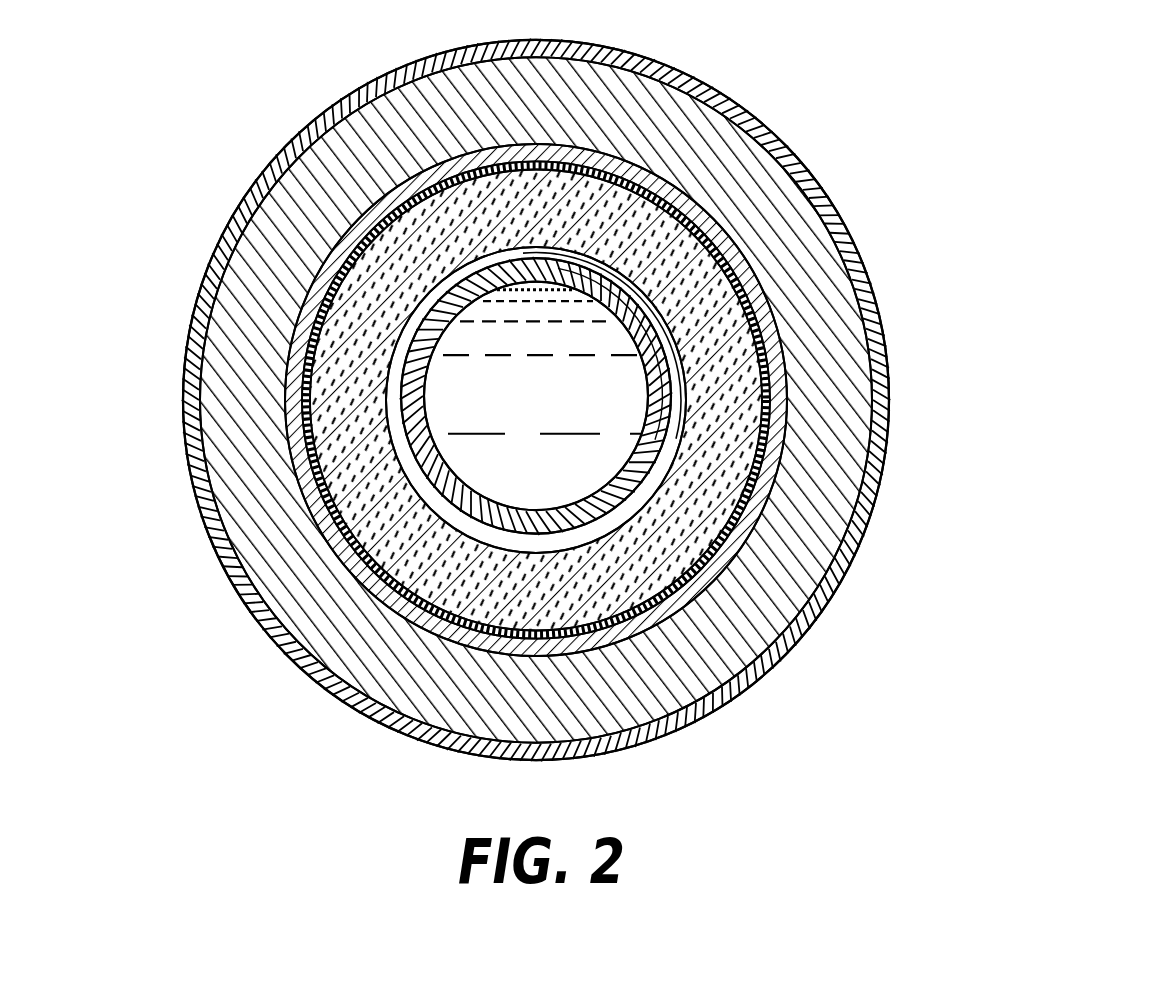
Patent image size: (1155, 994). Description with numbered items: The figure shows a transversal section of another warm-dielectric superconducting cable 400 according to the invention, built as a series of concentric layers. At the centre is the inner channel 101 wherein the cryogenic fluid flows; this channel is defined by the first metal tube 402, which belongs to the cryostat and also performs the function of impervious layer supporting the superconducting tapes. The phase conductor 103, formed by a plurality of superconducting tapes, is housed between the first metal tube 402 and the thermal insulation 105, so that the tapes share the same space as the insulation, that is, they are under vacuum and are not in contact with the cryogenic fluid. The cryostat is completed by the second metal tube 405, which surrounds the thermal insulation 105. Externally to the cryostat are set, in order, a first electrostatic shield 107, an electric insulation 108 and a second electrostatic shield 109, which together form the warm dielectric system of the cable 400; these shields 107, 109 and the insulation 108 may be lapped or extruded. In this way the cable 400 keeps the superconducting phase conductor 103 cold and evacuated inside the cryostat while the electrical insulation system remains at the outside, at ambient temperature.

The WD superconducting cable 400 is at (1143, 523).
The inner channel 101 is at (562, 415).
The phase conductor 103 is at (633, 432).
The first metal tube 402 is at (653, 477).
The thermal insulation 105 is at (740, 402).
The second metal tube 405 is at (780, 327).
The first electrostatic shield 107 is at (752, 265).
The electric insulation 108 is at (747, 168).
The second electrostatic shield 109 is at (732, 99).